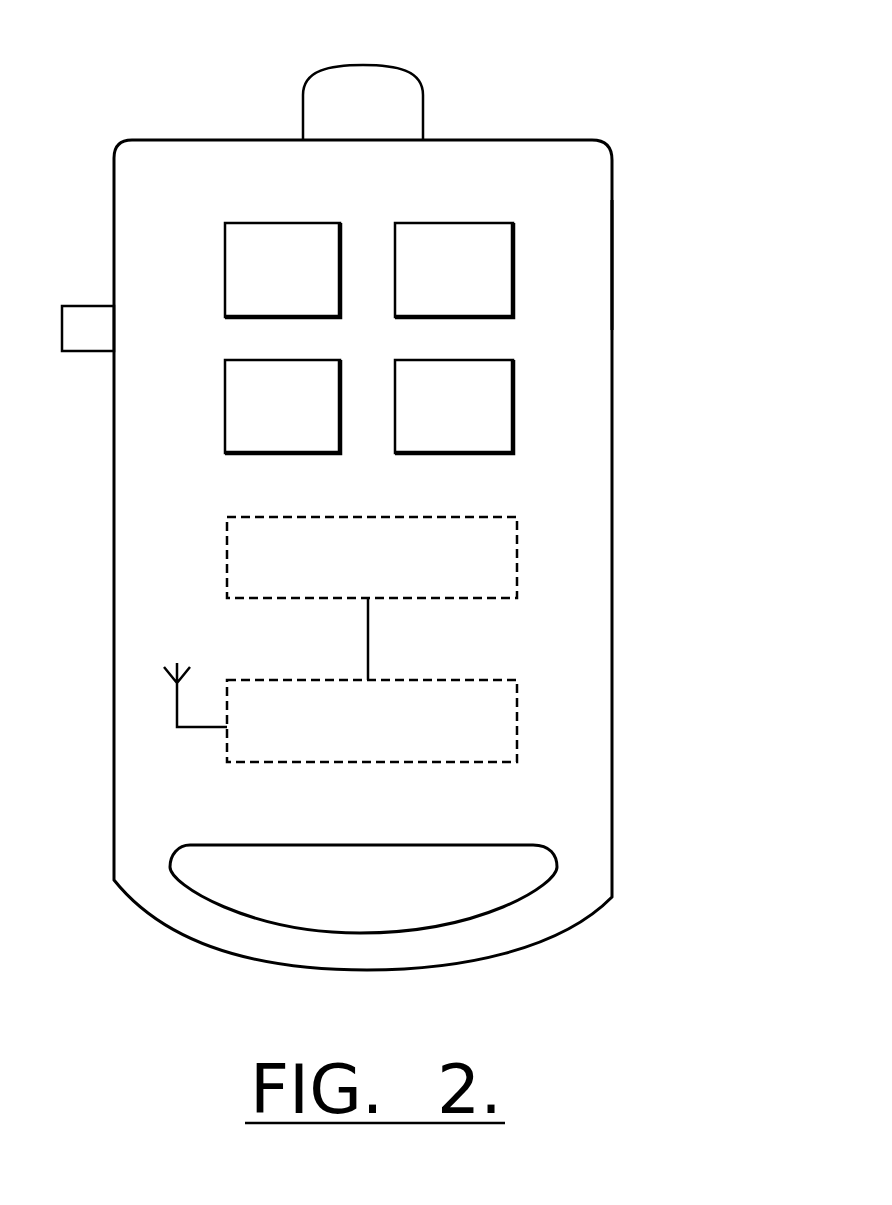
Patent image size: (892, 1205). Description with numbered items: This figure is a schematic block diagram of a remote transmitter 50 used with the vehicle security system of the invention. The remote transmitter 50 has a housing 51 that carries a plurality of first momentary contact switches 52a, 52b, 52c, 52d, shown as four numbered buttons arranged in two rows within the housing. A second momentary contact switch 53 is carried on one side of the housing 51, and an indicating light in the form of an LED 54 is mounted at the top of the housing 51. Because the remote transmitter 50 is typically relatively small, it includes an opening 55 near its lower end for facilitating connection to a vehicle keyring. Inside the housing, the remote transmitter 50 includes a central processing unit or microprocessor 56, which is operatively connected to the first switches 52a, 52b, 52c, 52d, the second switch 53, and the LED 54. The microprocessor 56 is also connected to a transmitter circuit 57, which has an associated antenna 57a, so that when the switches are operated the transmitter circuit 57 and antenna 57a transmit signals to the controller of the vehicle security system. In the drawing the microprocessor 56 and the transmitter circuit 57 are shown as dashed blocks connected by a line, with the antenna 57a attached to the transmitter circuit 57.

The remote transmitter 50 is at (652, 198).
The housing 51 is at (612, 322).
The first momentary contact switch 52a is at (225, 270).
The first momentary contact switch 52b is at (540, 227).
The first momentary contact switch 52c is at (225, 395).
The first momentary contact switch 52d is at (540, 356).
The second momentary contact switch 53 is at (92, 306).
The LED 54 is at (420, 91).
The opening 55 is at (507, 845).
The central processing unit or microprocessor 56 is at (227, 548).
The transmitter circuit 57 is at (517, 688).
The antenna 57a is at (177, 712).